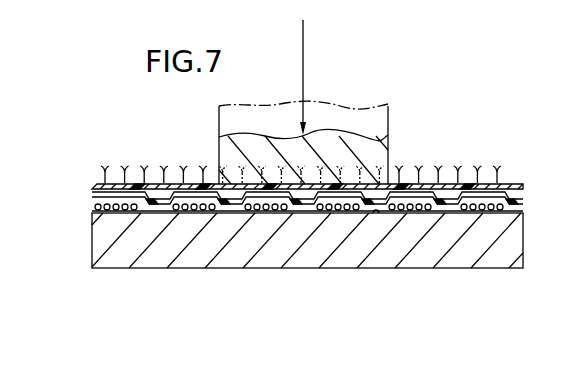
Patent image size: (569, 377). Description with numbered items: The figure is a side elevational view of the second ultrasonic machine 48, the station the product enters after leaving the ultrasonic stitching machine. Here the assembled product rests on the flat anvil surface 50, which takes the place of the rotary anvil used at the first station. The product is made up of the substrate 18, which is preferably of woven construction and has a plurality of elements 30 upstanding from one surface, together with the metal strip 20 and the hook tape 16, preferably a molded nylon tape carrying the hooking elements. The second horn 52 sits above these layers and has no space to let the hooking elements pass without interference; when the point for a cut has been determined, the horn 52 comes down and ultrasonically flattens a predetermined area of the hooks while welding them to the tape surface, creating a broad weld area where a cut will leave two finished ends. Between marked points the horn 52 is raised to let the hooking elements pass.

The second horn 52 is at (225, 152).
The second ultrasonic machine 48 is at (407, 161).
The metal strip 20 is at (99, 189).
The hook tape 16 is at (503, 187).
The elements 30 is at (93, 207).
The substrate 18 is at (523, 197).
The flat anvil surface 50 is at (376, 213).